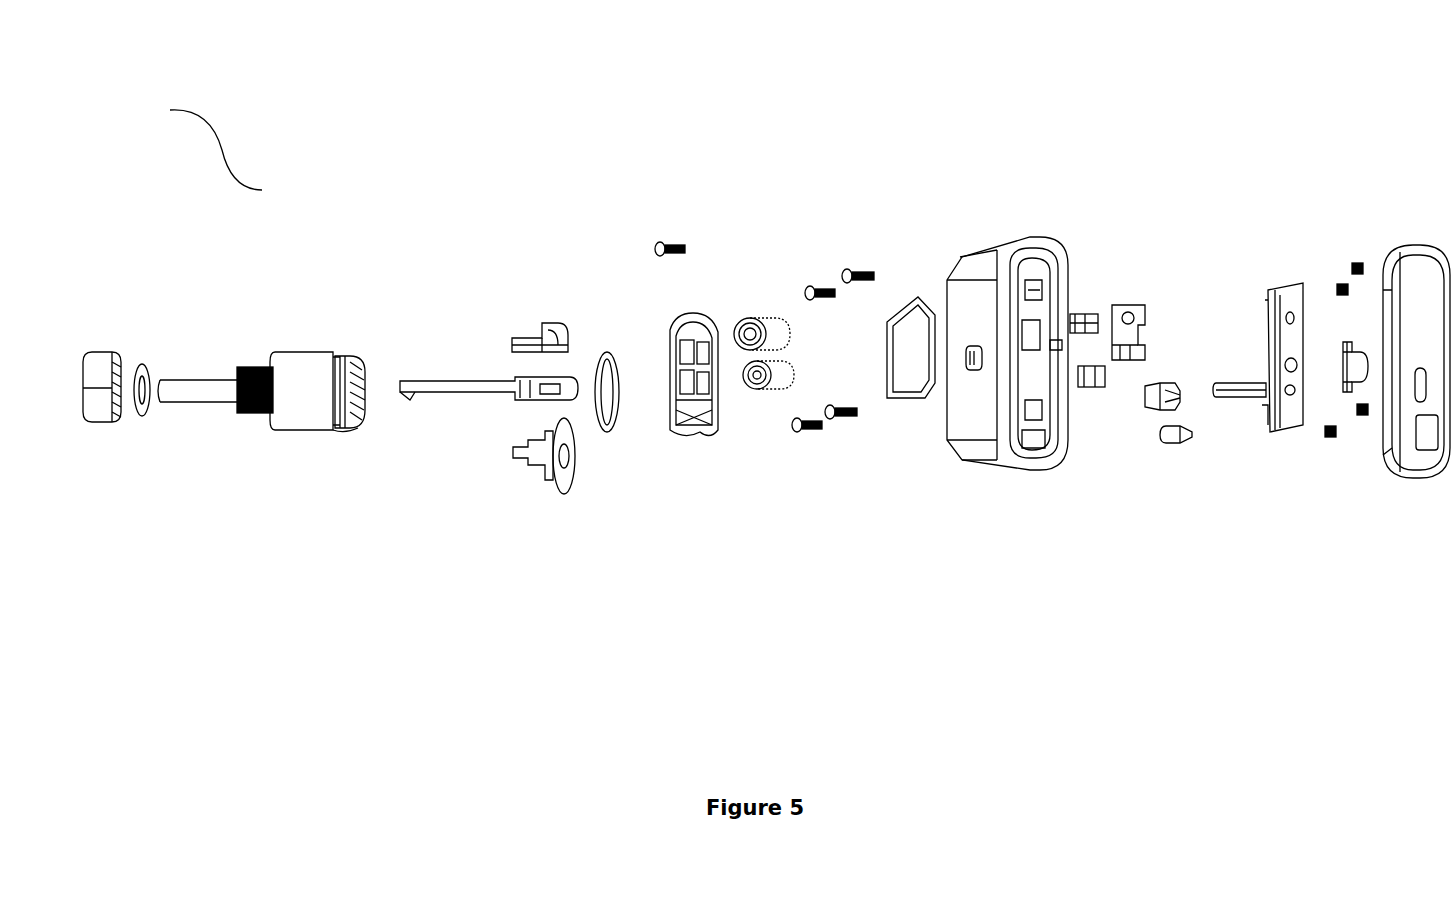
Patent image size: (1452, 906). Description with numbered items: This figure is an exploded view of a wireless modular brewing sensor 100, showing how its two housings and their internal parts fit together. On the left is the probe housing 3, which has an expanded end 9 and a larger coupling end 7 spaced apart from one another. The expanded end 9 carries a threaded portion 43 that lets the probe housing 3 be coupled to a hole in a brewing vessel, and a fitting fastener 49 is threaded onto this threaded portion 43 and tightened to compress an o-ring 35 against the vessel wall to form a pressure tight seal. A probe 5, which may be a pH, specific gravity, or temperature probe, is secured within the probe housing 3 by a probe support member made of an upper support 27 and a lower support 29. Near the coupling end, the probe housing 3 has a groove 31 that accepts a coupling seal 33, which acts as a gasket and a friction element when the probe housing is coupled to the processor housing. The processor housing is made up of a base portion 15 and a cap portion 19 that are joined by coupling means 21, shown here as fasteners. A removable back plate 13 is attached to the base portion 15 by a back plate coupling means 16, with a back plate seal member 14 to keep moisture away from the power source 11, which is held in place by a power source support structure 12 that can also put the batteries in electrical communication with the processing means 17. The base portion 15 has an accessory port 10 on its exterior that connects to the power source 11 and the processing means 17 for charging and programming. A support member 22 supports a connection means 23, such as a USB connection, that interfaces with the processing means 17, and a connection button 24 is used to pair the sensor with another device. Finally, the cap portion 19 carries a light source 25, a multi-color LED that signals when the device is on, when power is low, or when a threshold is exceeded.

The wireless modular brewing sensor 100 is at (187, 148).
The fitting fastener 49 is at (99, 348).
The o-ring 35 is at (144, 360).
The expanded end 9 is at (180, 380).
The threaded portion 43 is at (246, 405).
The probe housing 3 is at (305, 340).
The coupling end 7 is at (359, 348).
The groove 31 is at (332, 428).
The probe 5 is at (416, 394).
The upper support 27 is at (534, 340).
The lower support 29 is at (541, 480).
The coupling seal 33 is at (611, 358).
The back plate coupling means 16 is at (671, 245).
The back plate 13 is at (678, 435).
The power source 11 is at (753, 378).
The coupling means 21 is at (850, 272).
The back plate seal member 14 is at (898, 395).
The accessory port 10 is at (968, 345).
The base portion 15 is at (973, 452).
The power source support structure 12 is at (1098, 365).
The support member 22 is at (1144, 405).
The connection button 24 is at (1181, 438).
The connection means 23 is at (1231, 389).
The processing means 17 is at (1279, 430).
The light source 25 is at (1346, 345).
The cap portion 19 is at (1393, 458).